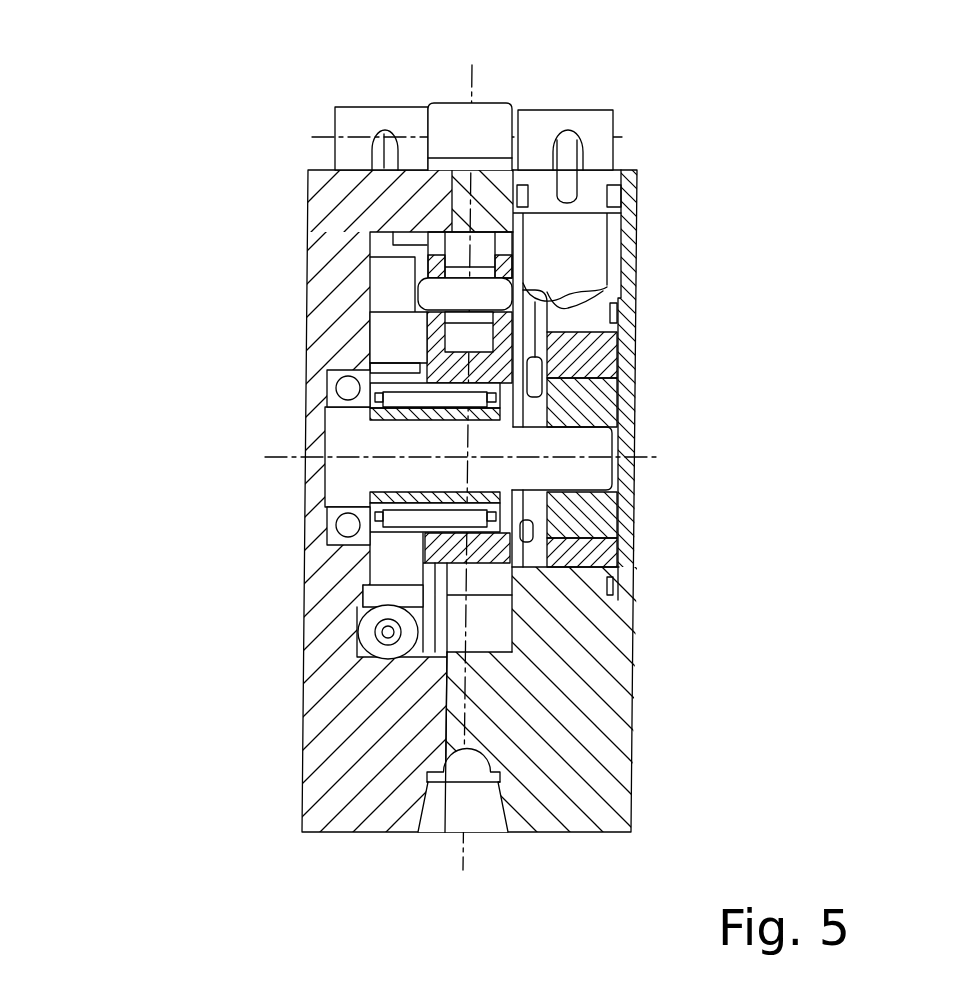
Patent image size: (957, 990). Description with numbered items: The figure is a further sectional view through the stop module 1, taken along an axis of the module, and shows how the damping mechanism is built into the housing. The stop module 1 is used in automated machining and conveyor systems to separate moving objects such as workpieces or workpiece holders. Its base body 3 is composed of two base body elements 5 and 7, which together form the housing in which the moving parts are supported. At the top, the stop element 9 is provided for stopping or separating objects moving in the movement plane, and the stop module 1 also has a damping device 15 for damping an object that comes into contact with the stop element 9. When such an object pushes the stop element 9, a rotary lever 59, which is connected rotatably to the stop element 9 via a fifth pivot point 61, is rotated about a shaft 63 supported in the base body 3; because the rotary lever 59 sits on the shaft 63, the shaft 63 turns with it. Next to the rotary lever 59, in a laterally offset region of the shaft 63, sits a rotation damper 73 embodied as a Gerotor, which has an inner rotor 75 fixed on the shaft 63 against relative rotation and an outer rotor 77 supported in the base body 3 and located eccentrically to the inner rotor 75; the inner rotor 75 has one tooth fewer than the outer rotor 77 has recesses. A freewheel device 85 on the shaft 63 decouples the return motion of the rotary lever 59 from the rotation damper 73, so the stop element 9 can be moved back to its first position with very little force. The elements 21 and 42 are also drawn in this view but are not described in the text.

The stop module 1 is at (152, 102).
The base body 3 is at (297, 206).
The base body element 5 is at (350, 692).
The base body element 7 is at (573, 693).
The stop element 9 is at (503, 92).
The damping device 15 is at (590, 316).
The fastening screw 21 is at (618, 124).
The plug 42 is at (457, 118).
The rotary lever 59 is at (427, 360).
The fifth pivot point 61 is at (437, 300).
The shaft 63 is at (355, 437).
The rotation damper 73 is at (590, 580).
The inner rotor 75 is at (576, 410).
The outer rotor 77 is at (578, 356).
The freewheel device 85 is at (403, 513).